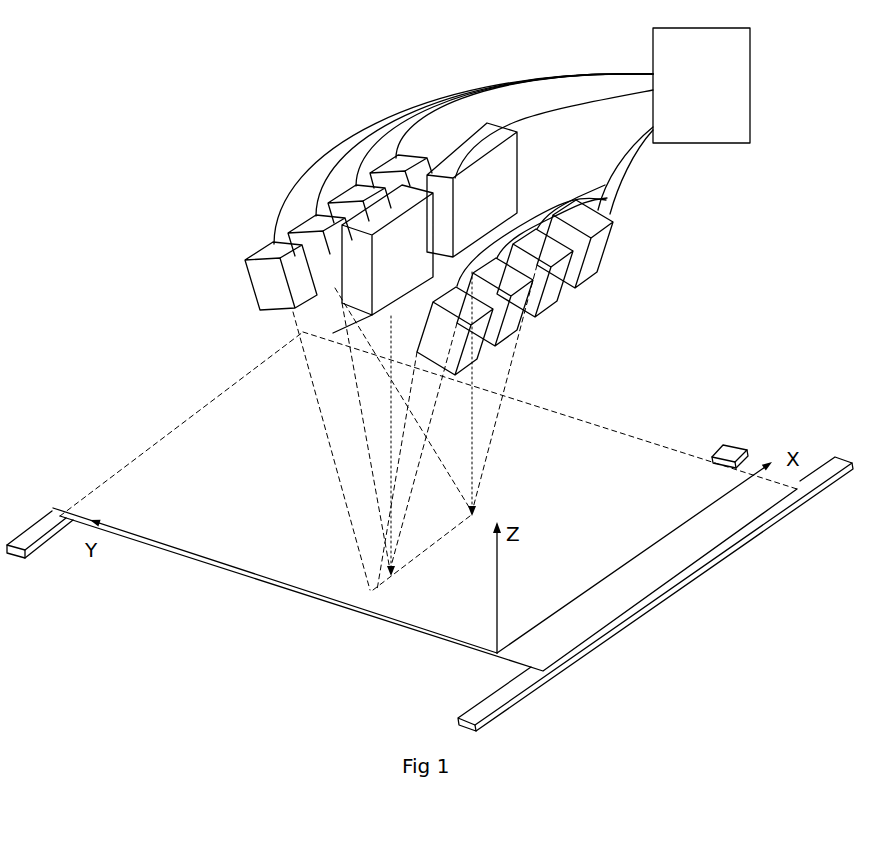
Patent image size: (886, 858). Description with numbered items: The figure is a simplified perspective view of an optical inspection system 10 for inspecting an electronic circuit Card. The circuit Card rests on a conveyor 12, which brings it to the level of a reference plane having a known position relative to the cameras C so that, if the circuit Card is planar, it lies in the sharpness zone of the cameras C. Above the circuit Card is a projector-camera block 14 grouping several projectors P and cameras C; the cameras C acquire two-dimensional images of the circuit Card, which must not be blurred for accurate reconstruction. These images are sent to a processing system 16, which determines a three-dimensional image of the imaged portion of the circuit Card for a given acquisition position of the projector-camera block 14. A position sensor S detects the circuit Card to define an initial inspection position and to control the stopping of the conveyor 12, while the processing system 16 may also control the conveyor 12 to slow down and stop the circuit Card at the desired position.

The optical inspection system 10 is at (126, 115).
The conveyor 12 is at (40, 545).
The projector-camera block 14 is at (424, 141).
The processing system 16 is at (722, 144).
The camera C is at (270, 245).
The projector P is at (342, 303).
The position sensor S is at (732, 447).
The electronic circuit Card is at (625, 434).